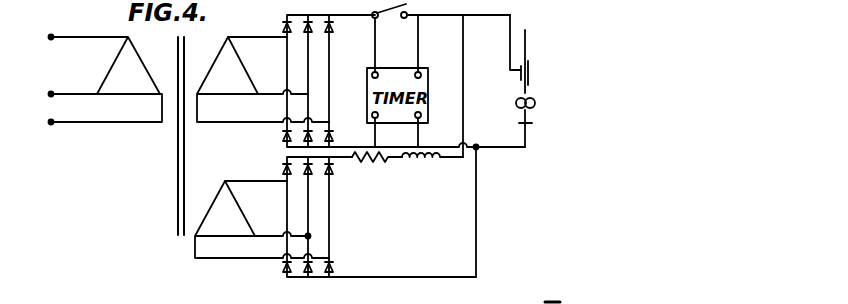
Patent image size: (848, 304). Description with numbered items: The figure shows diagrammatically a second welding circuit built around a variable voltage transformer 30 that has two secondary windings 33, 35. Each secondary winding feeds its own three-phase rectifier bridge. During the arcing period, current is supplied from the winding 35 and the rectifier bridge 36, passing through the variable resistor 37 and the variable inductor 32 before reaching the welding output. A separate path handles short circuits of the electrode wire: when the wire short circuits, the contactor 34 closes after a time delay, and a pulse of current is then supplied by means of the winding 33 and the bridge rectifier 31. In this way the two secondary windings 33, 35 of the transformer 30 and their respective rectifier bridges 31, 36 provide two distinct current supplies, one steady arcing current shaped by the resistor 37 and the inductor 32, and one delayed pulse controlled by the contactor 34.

The variable voltage transformer 30 is at (168, 130).
The secondary winding 33 is at (222, 60).
The bridge rectifier 31 is at (404, 81).
The contactor 34 is at (441, 22).
The secondary winding 35 is at (225, 202).
The rectifier bridge 36 is at (330, 163).
The variable resistor 37 is at (377, 167).
The variable inductor 32 is at (438, 162).